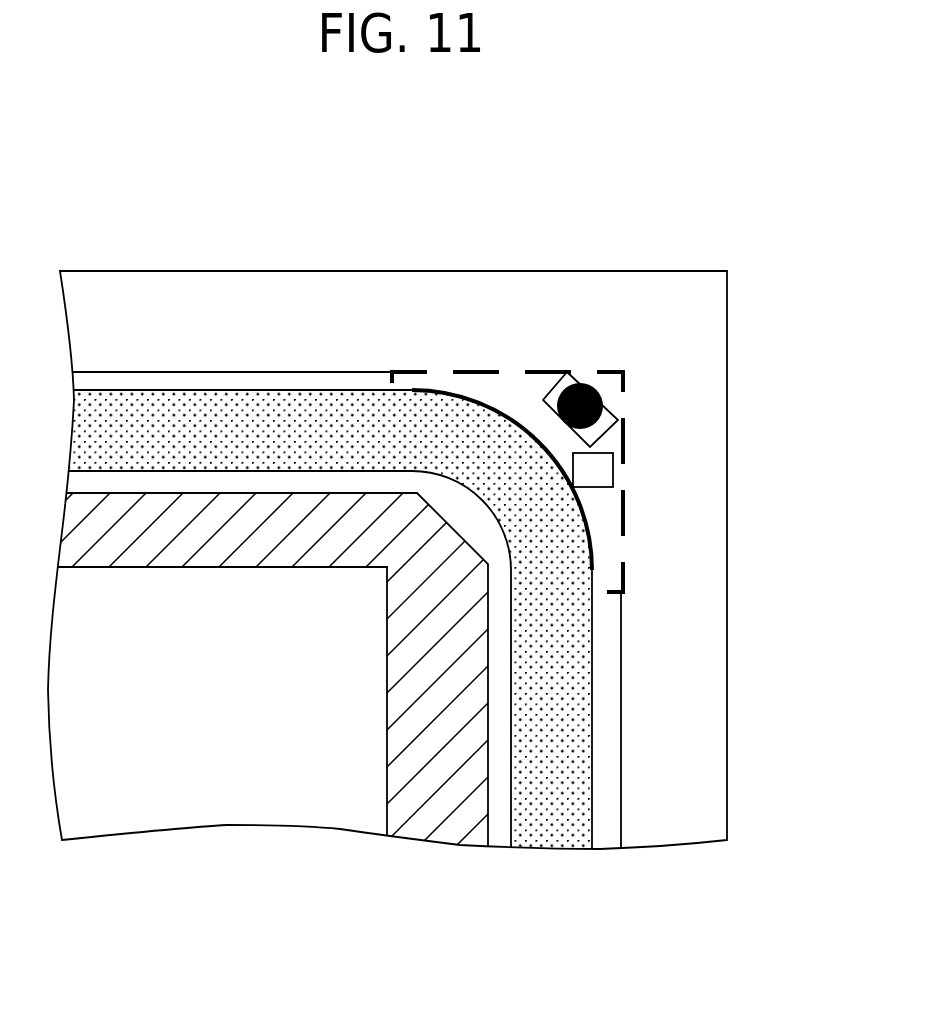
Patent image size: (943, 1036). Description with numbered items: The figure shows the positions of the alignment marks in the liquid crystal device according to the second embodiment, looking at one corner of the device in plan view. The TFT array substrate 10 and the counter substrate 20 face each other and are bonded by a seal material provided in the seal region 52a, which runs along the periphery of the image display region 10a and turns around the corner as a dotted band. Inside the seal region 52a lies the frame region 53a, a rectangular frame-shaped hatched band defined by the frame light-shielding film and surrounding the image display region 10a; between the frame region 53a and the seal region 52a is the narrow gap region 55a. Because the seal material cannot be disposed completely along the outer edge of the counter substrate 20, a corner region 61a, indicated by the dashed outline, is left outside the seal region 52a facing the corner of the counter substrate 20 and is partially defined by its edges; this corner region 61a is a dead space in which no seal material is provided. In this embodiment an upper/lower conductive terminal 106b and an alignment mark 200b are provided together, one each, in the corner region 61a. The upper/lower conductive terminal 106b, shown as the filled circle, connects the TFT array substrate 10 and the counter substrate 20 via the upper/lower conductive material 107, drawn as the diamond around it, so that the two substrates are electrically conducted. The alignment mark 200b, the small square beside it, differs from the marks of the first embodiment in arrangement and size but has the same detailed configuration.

The TFT array substrate 10 is at (466, 270).
The image display region 10a is at (227, 797).
The counter substrate 20 is at (305, 372).
The seal region 52a is at (560, 827).
The frame region 53a is at (442, 827).
The gap region 55a is at (503, 835).
The corner region 61a is at (553, 372).
The upper/lower conductive terminal 106b is at (587, 373).
The upper/lower conductive material 107 is at (600, 406).
The alignment mark 200b is at (597, 467).